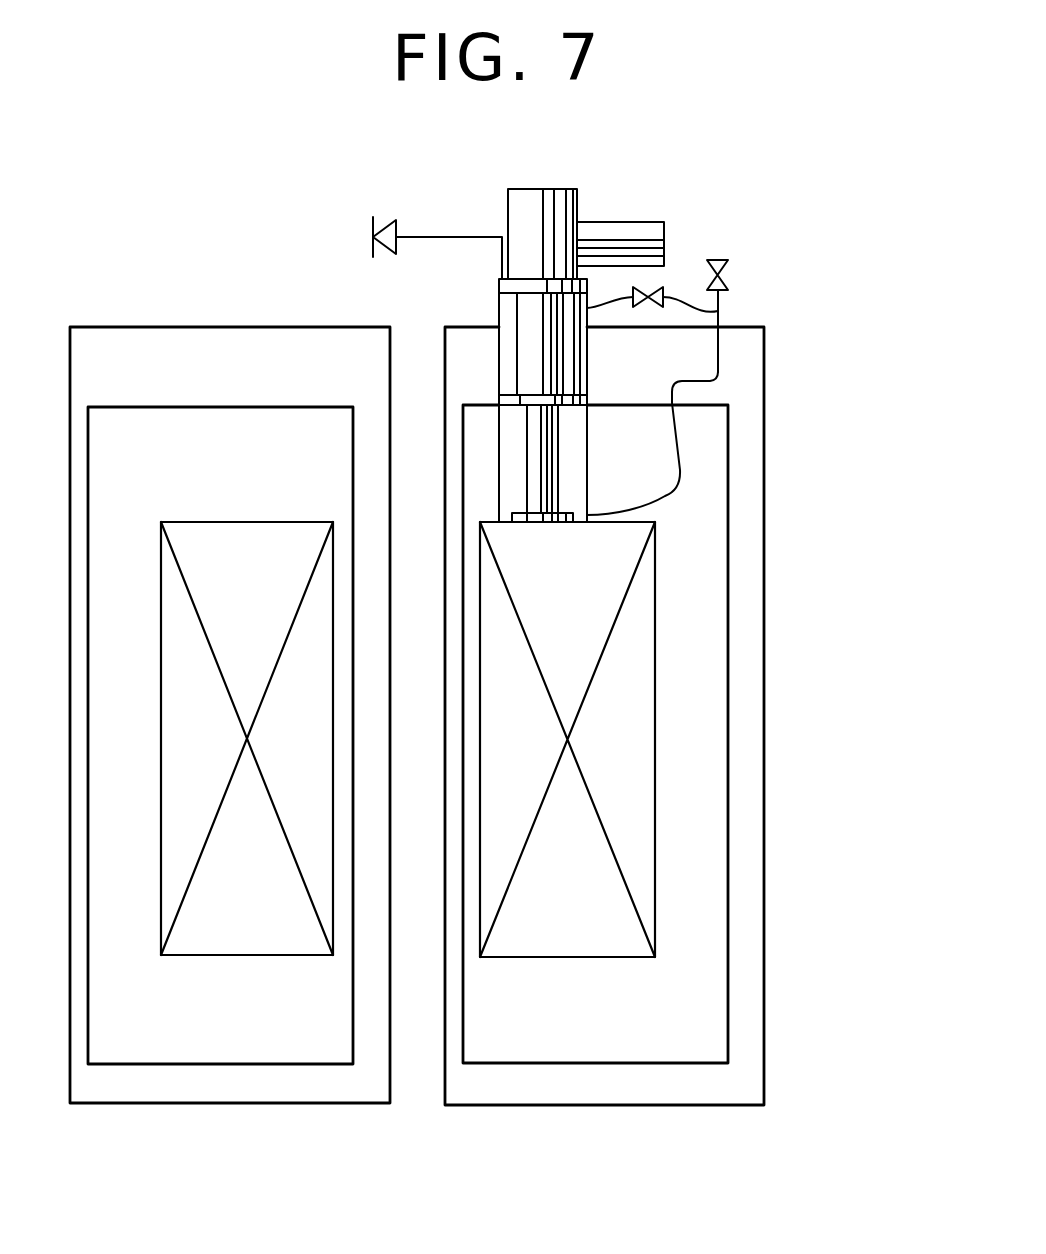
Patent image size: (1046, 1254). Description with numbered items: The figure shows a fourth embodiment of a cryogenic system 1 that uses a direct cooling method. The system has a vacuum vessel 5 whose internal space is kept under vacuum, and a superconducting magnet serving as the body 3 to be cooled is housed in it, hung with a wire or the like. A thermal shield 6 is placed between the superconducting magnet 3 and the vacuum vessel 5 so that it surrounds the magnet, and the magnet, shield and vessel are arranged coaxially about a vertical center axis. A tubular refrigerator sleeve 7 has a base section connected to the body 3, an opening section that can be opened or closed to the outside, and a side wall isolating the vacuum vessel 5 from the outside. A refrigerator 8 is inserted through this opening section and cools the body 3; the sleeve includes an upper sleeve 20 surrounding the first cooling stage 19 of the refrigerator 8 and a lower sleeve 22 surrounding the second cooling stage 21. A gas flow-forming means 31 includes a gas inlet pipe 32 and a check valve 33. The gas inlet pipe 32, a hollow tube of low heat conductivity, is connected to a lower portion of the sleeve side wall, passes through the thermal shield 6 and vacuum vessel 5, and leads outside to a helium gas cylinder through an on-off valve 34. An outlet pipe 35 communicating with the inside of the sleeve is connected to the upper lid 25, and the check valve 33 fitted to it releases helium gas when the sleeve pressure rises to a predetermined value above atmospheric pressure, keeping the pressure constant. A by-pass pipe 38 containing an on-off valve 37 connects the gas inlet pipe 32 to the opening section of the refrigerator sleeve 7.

The cryogenic system 1 is at (783, 587).
The body to be cooled 3 is at (300, 935).
The vacuum vessel 5 is at (128, 1103).
The thermal shield 6 is at (210, 1064).
The refrigerator sleeve 7 is at (497, 350).
The refrigerator 8 is at (565, 210).
The first cooling stage 19 is at (515, 400).
The upper sleeve 20 is at (498, 377).
The second cooling stage 21 is at (527, 515).
The lower sleeve 22 is at (498, 488).
The upper lid 25 is at (498, 287).
The gas flow-forming means 31 is at (688, 448).
The gas inlet pipe 32 is at (720, 368).
The check valve 33 is at (394, 218).
The on-off valve 34 is at (727, 268).
The outlet pipe 35 is at (465, 235).
The on-off valve 37 is at (662, 288).
The by-pass pipe 38 is at (720, 308).